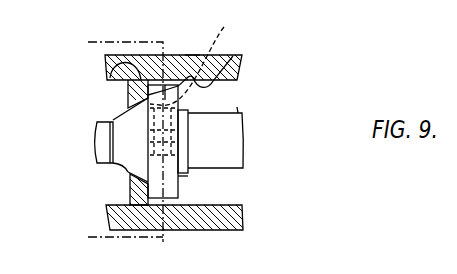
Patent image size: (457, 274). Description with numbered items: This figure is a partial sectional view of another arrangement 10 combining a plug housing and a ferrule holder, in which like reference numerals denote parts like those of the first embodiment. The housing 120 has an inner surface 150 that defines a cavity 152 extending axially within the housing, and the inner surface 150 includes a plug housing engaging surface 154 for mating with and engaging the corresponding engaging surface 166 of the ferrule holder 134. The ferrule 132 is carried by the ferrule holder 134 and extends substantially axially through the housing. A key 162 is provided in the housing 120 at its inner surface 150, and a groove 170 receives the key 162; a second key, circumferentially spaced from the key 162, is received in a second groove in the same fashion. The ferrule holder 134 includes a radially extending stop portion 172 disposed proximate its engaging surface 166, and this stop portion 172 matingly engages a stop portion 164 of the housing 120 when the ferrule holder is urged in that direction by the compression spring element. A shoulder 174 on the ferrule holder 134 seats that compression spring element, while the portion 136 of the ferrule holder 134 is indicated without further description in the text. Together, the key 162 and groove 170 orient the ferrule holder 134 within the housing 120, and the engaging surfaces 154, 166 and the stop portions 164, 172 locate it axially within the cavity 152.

The section view indicator 10 is at (90, 42).
The housing 120 is at (192, 55).
The plug 132 is at (103, 118).
The flange 134 is at (190, 180).
The shoulder 136 is at (226, 171).
The housing inner surface 150 is at (240, 55).
The opening 152 is at (237, 107).
The seat surface 154 is at (140, 97).
The key 162 is at (177, 85).
The gasket 164 is at (108, 58).
The cap 166 is at (125, 138).
The groove 170 is at (194, 56).
The lower wall 172 is at (178, 193).
The shaft 174 is at (190, 150).